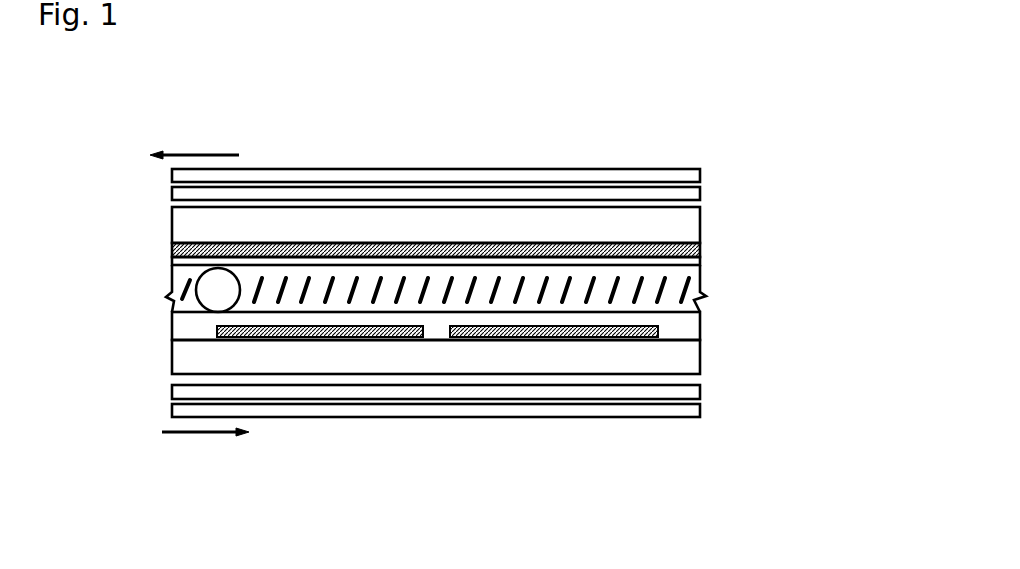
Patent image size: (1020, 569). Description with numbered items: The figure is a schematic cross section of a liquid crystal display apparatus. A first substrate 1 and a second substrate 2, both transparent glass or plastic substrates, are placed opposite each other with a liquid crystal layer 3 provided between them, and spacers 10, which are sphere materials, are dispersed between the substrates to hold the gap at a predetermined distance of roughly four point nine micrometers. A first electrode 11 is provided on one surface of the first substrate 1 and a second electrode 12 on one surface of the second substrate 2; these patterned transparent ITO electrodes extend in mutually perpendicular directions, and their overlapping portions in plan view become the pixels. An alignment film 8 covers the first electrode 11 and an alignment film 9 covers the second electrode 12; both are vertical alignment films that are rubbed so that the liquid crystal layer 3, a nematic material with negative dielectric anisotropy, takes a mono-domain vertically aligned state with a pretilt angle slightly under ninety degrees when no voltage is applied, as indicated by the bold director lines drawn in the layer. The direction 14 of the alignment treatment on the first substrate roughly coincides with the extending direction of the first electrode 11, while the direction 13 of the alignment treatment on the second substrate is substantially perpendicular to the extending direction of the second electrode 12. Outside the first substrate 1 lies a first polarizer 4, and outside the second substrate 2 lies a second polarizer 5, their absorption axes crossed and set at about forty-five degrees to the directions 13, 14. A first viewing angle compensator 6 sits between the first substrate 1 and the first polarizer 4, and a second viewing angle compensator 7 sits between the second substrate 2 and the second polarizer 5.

The first substrate 1 is at (703, 212).
The second substrate 2 is at (703, 359).
The liquid crystal layer 3 is at (702, 278).
The first polarizer 4 is at (675, 176).
The second polarizer 5 is at (676, 417).
The first viewing angle compensator 6 is at (632, 196).
The second viewing angle compensator 7 is at (637, 394).
The alignment film 8 is at (703, 259).
The alignment film 9 is at (703, 320).
The spacers 10 is at (181, 284).
The first electrode 11 is at (508, 243).
The second electrode 12 is at (352, 340).
The direction of the alignment treatment performed to the second substrate 13 is at (205, 437).
The direction of the alignment treatment performed to the first substrate 14 is at (193, 152).